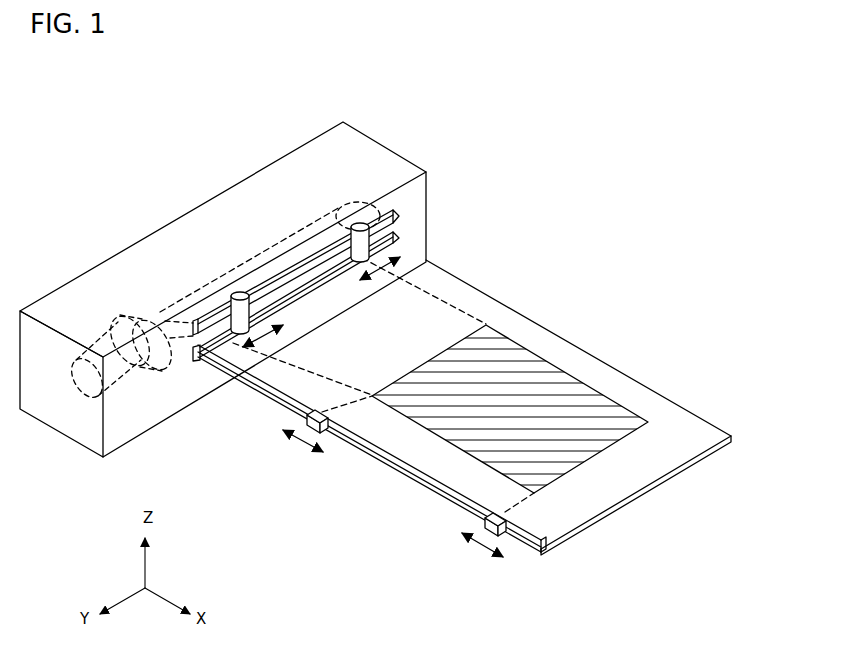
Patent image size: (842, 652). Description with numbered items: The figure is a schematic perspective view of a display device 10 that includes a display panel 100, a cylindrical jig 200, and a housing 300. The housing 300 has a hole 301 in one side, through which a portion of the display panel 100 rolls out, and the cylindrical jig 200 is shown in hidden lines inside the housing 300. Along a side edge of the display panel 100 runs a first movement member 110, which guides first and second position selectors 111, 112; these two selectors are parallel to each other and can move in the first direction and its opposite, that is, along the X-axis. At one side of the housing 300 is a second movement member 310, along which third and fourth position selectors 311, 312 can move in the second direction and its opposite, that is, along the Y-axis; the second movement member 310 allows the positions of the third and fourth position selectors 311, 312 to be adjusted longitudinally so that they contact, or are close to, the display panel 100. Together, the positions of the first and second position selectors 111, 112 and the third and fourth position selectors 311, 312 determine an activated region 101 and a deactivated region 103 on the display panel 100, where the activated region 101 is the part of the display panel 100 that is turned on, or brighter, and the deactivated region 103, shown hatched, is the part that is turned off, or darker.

The display device 10 is at (50, 137).
The display panel 100 is at (668, 382).
The activated region 101 is at (502, 347).
The deactivated region 103 is at (565, 352).
The first movement member 110 is at (407, 470).
The first position selector 111 is at (312, 432).
The second position selector 112 is at (491, 534).
The cylindrical jig 200 is at (83, 388).
The housing 300 is at (390, 140).
The hole 301 is at (203, 362).
The second movement member 310 is at (400, 214).
The third position selector 311 is at (359, 225).
The fourth position selector 312 is at (241, 294).